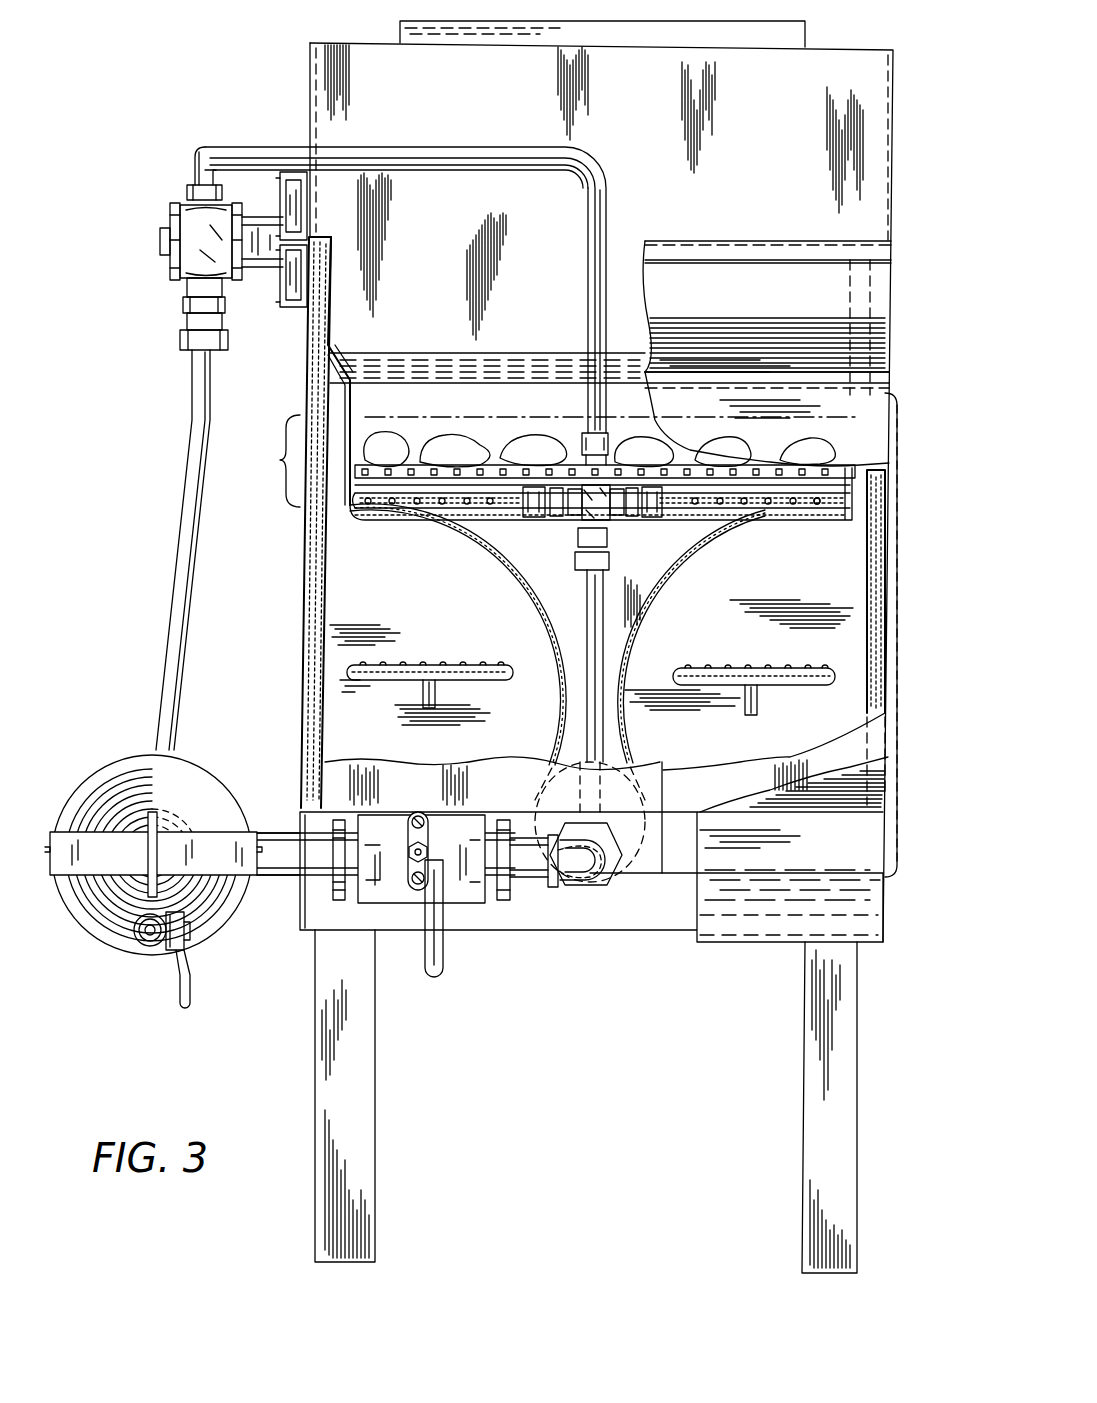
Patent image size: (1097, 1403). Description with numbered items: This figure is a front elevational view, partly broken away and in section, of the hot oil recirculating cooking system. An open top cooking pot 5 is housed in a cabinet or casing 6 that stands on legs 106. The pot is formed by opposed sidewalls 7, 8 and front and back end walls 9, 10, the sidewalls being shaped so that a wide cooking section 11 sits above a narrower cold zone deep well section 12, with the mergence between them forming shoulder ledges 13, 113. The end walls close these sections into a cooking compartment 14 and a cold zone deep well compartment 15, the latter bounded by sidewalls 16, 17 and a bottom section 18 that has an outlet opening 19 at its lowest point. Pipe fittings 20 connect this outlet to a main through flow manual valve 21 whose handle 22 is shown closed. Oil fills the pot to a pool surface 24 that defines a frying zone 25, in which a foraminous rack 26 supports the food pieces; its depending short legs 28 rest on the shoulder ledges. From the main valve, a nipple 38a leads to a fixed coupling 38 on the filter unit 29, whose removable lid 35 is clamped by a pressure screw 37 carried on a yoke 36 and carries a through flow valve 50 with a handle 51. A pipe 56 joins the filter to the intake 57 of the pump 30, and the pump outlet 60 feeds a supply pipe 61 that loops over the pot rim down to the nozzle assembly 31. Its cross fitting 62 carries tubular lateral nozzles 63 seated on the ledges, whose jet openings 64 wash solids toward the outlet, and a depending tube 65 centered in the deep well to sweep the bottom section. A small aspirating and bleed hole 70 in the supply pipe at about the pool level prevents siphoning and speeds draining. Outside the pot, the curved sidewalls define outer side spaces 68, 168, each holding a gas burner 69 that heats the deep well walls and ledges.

The cooking pot 5 is at (331, 237).
The cabinet or casing 6 is at (690, 283).
The sidewall 7 is at (303, 383).
The sidewall 8 is at (856, 495).
The front end wall 9 is at (631, 839).
The back end wall 10 is at (493, 385).
The cooking section 11 is at (897, 450).
The cold zone deep well section 12 is at (890, 683).
The shoulder ledge 13 is at (397, 503).
The cooking compartment 14 is at (568, 416).
The cold zone deep well compartment 15 is at (546, 603).
The sidewall of cold zone deep well 16 is at (548, 637).
The sidewall of cold zone deep well 17 is at (638, 637).
The bottom section 18 is at (662, 820).
The outlet opening 19 is at (593, 885).
The pipe fittings 20 is at (545, 885).
The main through flow manual valve 21 is at (466, 823).
The manual manipulative handle 22 is at (435, 962).
The oil pool surface 24 is at (402, 418).
The frying zone 25 is at (273, 461).
The foraminous rack or screen 26 is at (727, 465).
The depending short legs 28 is at (360, 500).
The filter unit 29 is at (65, 929).
The pump 30 is at (174, 287).
The nozzle assembly 31 is at (612, 522).
The removable cap or lid 35 is at (98, 818).
The yoke 36 is at (70, 862).
The pressure applying manual screw 37 is at (148, 855).
The fixed coupling 38 is at (272, 832).
The nipple 38a is at (300, 878).
The through flow valve 50 is at (151, 956).
The manual manipulating handle 51 is at (190, 1000).
The pipe or tube 56 is at (197, 517).
The intake 57 is at (225, 296).
The outlet 60 is at (191, 174).
The supply or discharge pipe or tube 61 is at (445, 150).
The cross fitting 62 is at (580, 513).
The tubular lateral nozzles 63 is at (500, 506).
The jet openings 64 is at (467, 508).
The depending tube 65 is at (579, 719).
The outer side space 68 is at (432, 643).
The gas burners 69 is at (387, 689).
The aspirating and bleed hole 70 is at (604, 411).
The legs 106 is at (375, 1068).
The shoulder ledge 113 is at (817, 508).
The outer side space 168 is at (795, 648).